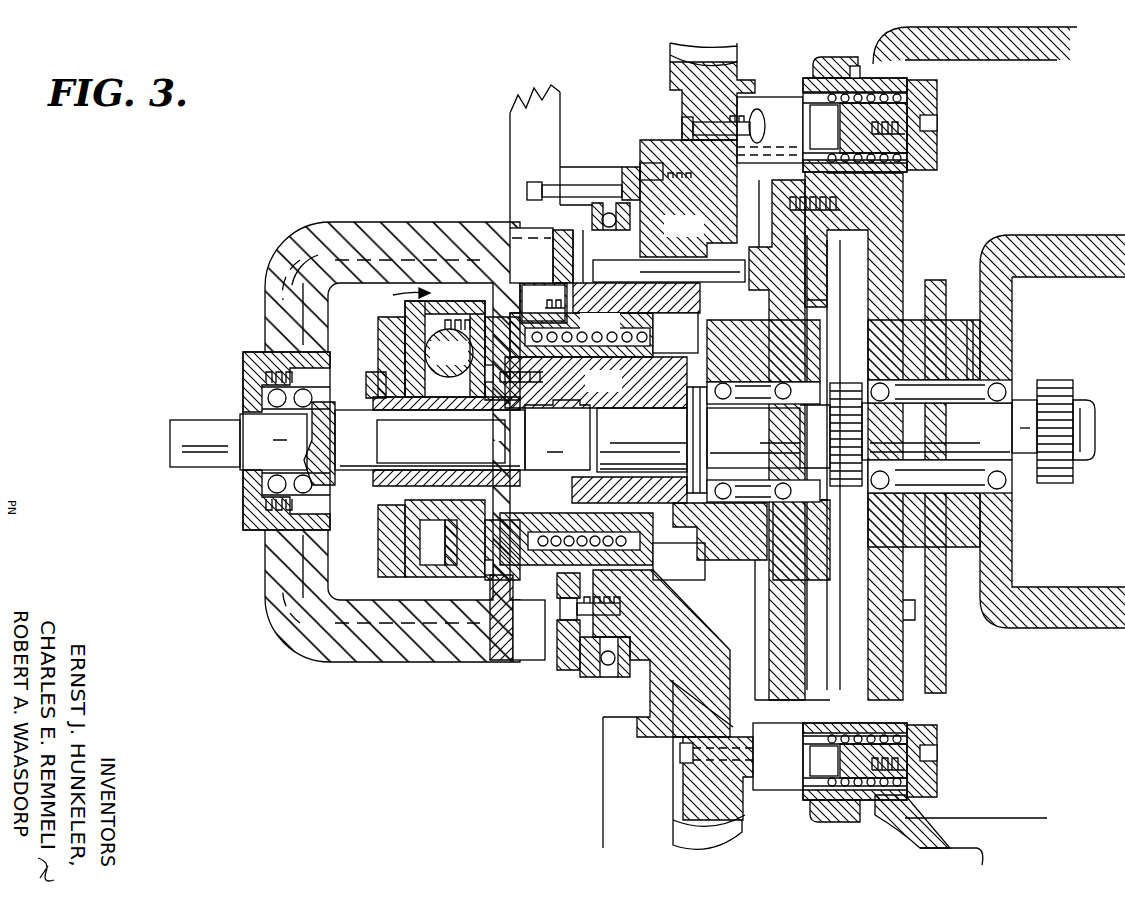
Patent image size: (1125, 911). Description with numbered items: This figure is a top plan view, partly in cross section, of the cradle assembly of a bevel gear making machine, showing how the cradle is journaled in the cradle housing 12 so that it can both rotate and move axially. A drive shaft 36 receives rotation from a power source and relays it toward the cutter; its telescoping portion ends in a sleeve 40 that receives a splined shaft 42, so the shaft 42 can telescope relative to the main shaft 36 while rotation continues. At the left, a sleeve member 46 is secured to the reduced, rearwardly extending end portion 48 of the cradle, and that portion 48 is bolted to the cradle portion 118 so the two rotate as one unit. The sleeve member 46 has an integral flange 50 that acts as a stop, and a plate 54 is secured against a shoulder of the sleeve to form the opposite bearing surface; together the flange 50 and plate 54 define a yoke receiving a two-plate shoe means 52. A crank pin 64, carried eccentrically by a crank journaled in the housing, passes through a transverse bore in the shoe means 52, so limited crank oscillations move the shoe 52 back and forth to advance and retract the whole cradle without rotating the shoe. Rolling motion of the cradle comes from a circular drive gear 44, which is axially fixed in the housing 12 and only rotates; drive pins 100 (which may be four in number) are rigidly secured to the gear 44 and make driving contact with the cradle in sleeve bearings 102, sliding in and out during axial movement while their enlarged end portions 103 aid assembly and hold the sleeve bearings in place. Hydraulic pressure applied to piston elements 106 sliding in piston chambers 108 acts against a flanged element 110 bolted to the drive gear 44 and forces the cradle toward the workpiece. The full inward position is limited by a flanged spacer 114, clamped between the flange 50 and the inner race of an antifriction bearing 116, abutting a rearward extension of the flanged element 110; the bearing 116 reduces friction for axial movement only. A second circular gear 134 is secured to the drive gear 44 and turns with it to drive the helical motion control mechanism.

The cradle housing 12 is at (515, 130).
The drive shaft 36 is at (217, 470).
The sleeve 40 is at (350, 482).
The splined shaft 42 is at (422, 458).
The drive gear 44 is at (698, 22).
The sleeve member 46 is at (358, 398).
The reduced end portion 48 is at (602, 393).
The flange 50 is at (499, 415).
The shoe means 52 is at (393, 298).
The plate 54 is at (388, 560).
The crank pin 64 is at (462, 350).
The drive pins 100 is at (782, 100).
The sleeve bearings 102 is at (877, 78).
The enlarged end portions 103 is at (933, 100).
The piston elements 106 is at (684, 262).
The piston chambers 108 is at (669, 271).
The flanged element 110 is at (577, 216).
The flanged spacer 114 is at (505, 672).
The antifriction bearing 116 is at (645, 328).
The cradle portion 118 is at (905, 192).
The second circular gear 134 is at (655, 740).